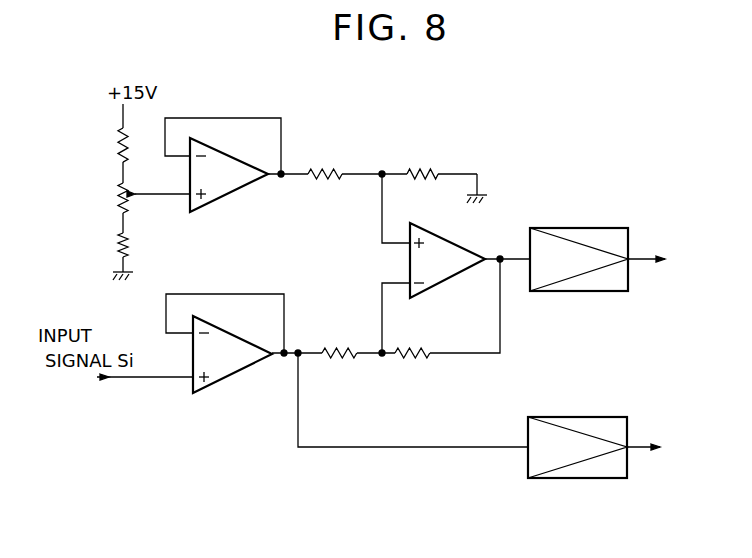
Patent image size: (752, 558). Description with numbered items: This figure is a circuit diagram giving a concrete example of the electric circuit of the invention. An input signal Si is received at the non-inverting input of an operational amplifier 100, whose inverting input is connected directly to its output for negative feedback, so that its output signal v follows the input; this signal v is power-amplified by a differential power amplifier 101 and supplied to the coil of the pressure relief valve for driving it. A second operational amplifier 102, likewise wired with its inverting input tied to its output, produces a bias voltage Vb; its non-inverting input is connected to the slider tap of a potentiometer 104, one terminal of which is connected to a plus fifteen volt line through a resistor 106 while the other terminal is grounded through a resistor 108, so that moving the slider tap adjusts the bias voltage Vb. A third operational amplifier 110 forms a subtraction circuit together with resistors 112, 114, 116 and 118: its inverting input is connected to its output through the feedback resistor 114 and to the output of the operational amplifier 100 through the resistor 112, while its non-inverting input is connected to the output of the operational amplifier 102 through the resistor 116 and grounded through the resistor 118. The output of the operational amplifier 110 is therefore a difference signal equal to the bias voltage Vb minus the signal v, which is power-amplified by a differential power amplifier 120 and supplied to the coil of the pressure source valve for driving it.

The operational amplifier 100 is at (237, 373).
The differential power amplifier 101 is at (593, 480).
The operational amplifier 102 is at (240, 190).
The potentiometer 104 is at (114, 195).
The resistor 106 is at (114, 142).
The resistor 108 is at (114, 244).
The operational amplifier 110 is at (464, 272).
The resistor 112 is at (333, 361).
The resistor 114 is at (418, 361).
The resistor 116 is at (320, 180).
The resistor 118 is at (427, 180).
The differential power amplifier 120 is at (596, 292).